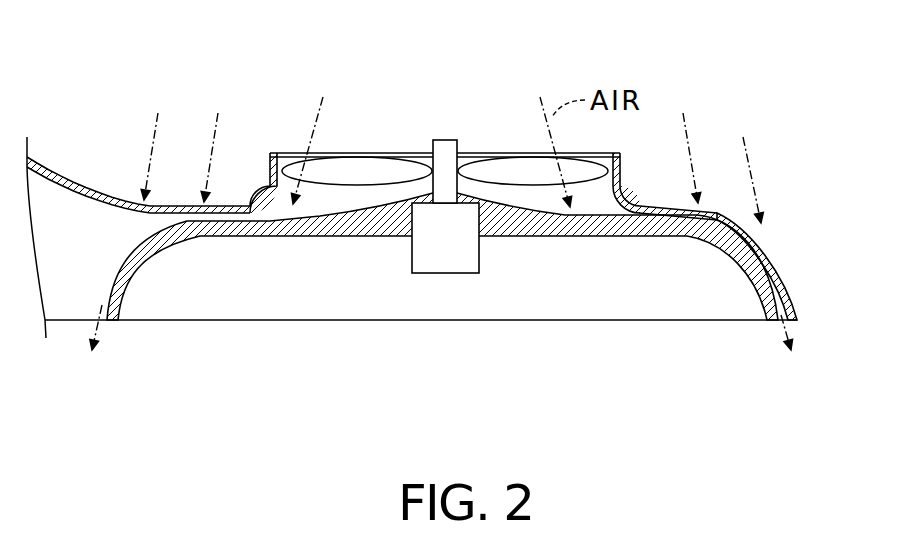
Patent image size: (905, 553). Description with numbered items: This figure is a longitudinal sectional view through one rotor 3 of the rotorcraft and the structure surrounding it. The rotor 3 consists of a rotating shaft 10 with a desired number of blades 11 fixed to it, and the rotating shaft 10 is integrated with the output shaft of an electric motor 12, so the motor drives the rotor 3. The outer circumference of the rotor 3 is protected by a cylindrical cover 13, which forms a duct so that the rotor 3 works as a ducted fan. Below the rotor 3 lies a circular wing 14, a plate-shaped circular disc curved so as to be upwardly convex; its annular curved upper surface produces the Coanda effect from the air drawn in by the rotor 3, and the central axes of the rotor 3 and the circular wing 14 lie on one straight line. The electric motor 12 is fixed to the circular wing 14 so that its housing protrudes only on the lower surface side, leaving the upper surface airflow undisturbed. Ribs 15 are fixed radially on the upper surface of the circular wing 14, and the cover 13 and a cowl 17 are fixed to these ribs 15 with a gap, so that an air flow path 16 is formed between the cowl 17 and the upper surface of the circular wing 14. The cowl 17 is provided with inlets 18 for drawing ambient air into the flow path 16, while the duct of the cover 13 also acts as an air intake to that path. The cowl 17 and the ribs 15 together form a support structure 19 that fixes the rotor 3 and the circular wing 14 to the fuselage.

The rotor 3 is at (436, 114).
The rotating shaft 10 is at (447, 152).
The blades 11 is at (360, 167).
The electric motor 12 is at (445, 273).
The cylindrical cover 13 is at (270, 168).
The circular wing 14 is at (777, 273).
The ribs 15 is at (72, 220).
The air flow path 16 is at (177, 222).
The cowl 17 is at (115, 204).
The inlets 18 is at (770, 237).
The support structure 19 is at (90, 153).